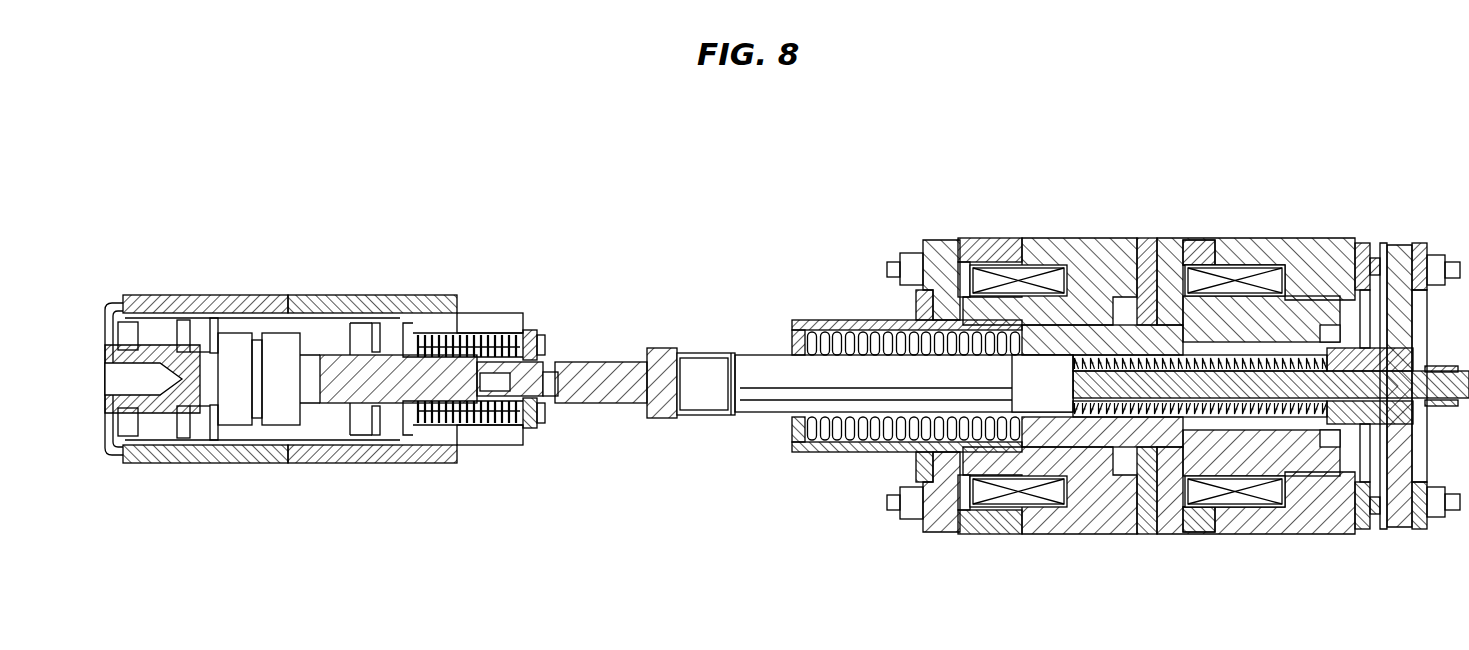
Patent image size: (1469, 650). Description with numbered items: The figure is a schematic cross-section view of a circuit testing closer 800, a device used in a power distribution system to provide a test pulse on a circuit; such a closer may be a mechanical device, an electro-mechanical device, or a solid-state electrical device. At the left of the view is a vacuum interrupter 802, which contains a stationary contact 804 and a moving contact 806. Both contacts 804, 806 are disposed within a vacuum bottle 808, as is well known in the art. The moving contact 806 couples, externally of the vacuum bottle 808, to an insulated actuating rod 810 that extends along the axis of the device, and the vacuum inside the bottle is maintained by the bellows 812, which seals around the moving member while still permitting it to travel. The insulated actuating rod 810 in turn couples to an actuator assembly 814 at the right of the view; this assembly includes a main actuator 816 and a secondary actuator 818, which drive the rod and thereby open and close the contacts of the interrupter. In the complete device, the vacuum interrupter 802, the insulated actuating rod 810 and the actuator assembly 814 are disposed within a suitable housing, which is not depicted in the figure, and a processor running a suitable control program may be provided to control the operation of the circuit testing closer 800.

The circuit testing closer 800 is at (1223, 146).
The vacuum interrupter 802 is at (400, 296).
The stationary contact 804 is at (230, 427).
The moving contact 806 is at (277, 427).
The vacuum bottle 808 is at (213, 296).
The insulated actuating rod 810 is at (612, 398).
The bellows 812 is at (499, 433).
The actuator assembly 814 is at (1292, 212).
The main actuator 816 is at (1305, 548).
The secondary actuator 818 is at (1035, 548).